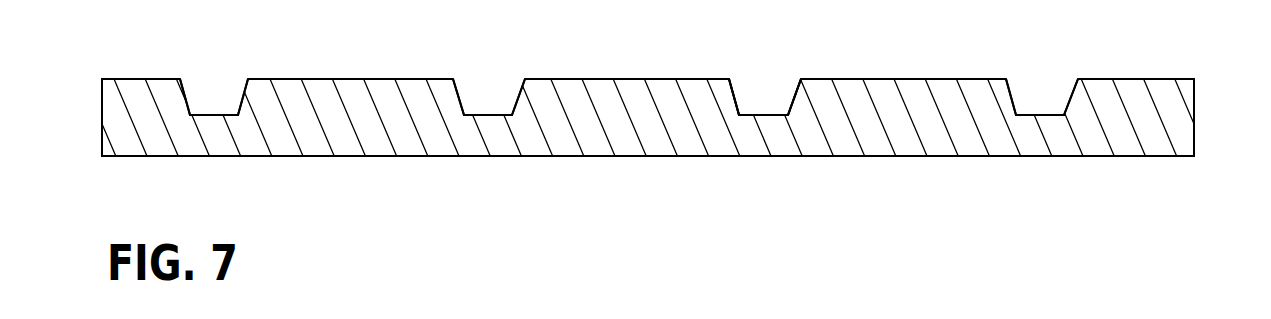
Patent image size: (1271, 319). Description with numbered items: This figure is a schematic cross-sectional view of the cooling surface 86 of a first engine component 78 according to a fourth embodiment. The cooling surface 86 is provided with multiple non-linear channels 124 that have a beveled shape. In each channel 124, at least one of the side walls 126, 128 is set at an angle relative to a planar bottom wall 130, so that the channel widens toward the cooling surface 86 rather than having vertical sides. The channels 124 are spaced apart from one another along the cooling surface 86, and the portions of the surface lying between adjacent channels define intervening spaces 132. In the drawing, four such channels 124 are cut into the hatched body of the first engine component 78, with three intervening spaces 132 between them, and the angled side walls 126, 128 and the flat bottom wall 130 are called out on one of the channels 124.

The cooling surface 86 is at (138, 79).
The first engine component 78 is at (1183, 78).
The non-linear channel 124 is at (212, 98).
The intervening space 132 is at (347, 78).
The side wall 126 is at (733, 98).
The planar bottom wall 130 is at (757, 115).
The side wall 128 is at (794, 100).